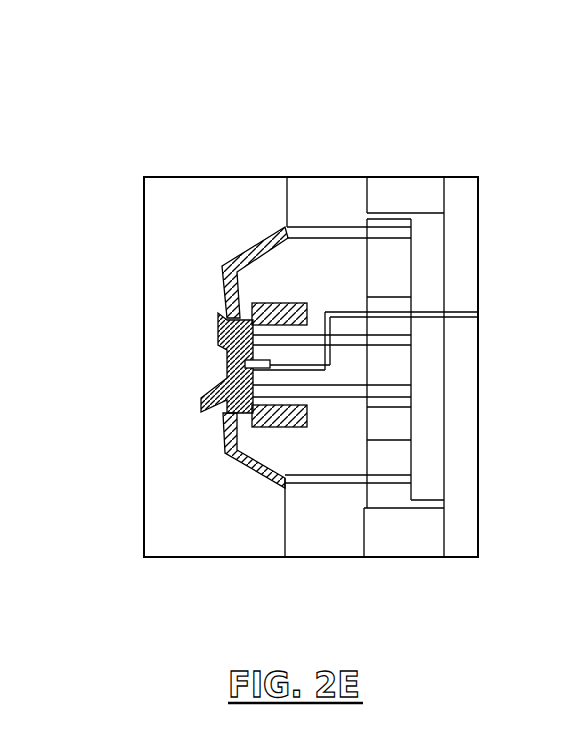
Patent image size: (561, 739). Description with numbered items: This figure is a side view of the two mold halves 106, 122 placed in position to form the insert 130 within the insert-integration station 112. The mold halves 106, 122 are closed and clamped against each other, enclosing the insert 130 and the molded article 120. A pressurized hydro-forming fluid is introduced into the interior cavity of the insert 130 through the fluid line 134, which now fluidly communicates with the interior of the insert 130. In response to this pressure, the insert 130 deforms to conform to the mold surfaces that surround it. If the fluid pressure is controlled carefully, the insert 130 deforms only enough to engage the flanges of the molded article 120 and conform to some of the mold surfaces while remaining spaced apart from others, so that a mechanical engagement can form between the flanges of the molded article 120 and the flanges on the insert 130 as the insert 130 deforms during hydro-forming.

The insert-integration station 112 is at (286, 327).
The molded article 120 is at (247, 253).
The insert 130 is at (227, 370).
The fluid line 134 is at (270, 368).
The mold half 122 is at (183, 532).
The mold half 106 is at (305, 533).